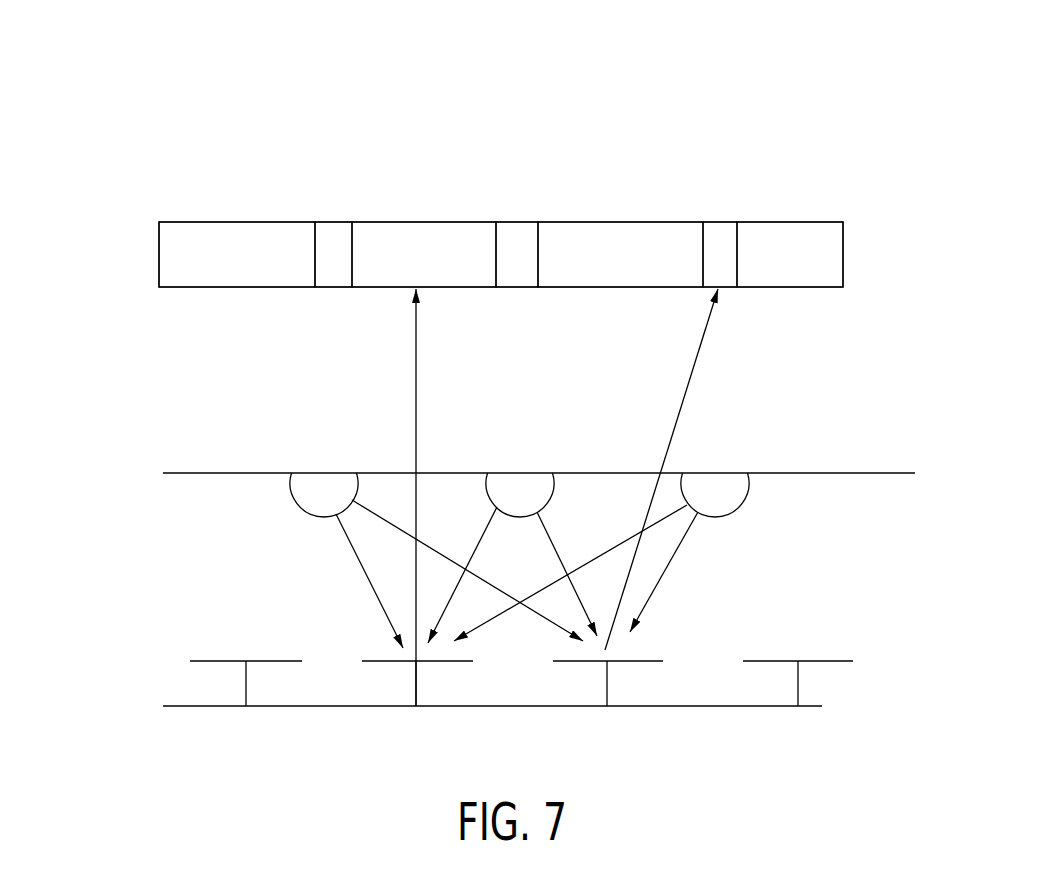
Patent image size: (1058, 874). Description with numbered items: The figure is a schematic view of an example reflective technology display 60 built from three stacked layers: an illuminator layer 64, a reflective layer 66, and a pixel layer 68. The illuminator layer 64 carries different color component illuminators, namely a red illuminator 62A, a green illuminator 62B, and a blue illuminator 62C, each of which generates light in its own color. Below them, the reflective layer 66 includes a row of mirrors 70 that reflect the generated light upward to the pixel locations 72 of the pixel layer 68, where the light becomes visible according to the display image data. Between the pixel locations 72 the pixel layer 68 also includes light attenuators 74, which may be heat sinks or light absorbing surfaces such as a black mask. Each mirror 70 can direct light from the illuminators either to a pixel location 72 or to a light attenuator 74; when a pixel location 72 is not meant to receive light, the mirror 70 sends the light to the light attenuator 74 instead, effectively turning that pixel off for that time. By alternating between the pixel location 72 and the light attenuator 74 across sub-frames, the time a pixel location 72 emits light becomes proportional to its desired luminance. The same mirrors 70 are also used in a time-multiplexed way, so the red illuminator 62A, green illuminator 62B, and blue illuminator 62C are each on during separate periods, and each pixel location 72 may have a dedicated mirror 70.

The reflective technology display 60 is at (898, 109).
The red illuminator 62A is at (303, 508).
The green illuminator 62B is at (551, 496).
The blue illuminator 62C is at (733, 511).
The illuminator layer 64 is at (132, 494).
The reflective layer 66 is at (132, 655).
The pixel layer 68 is at (132, 199).
The mirror 70 is at (200, 662).
The pixel location 72 is at (253, 221).
The light attenuator 74 is at (326, 289).